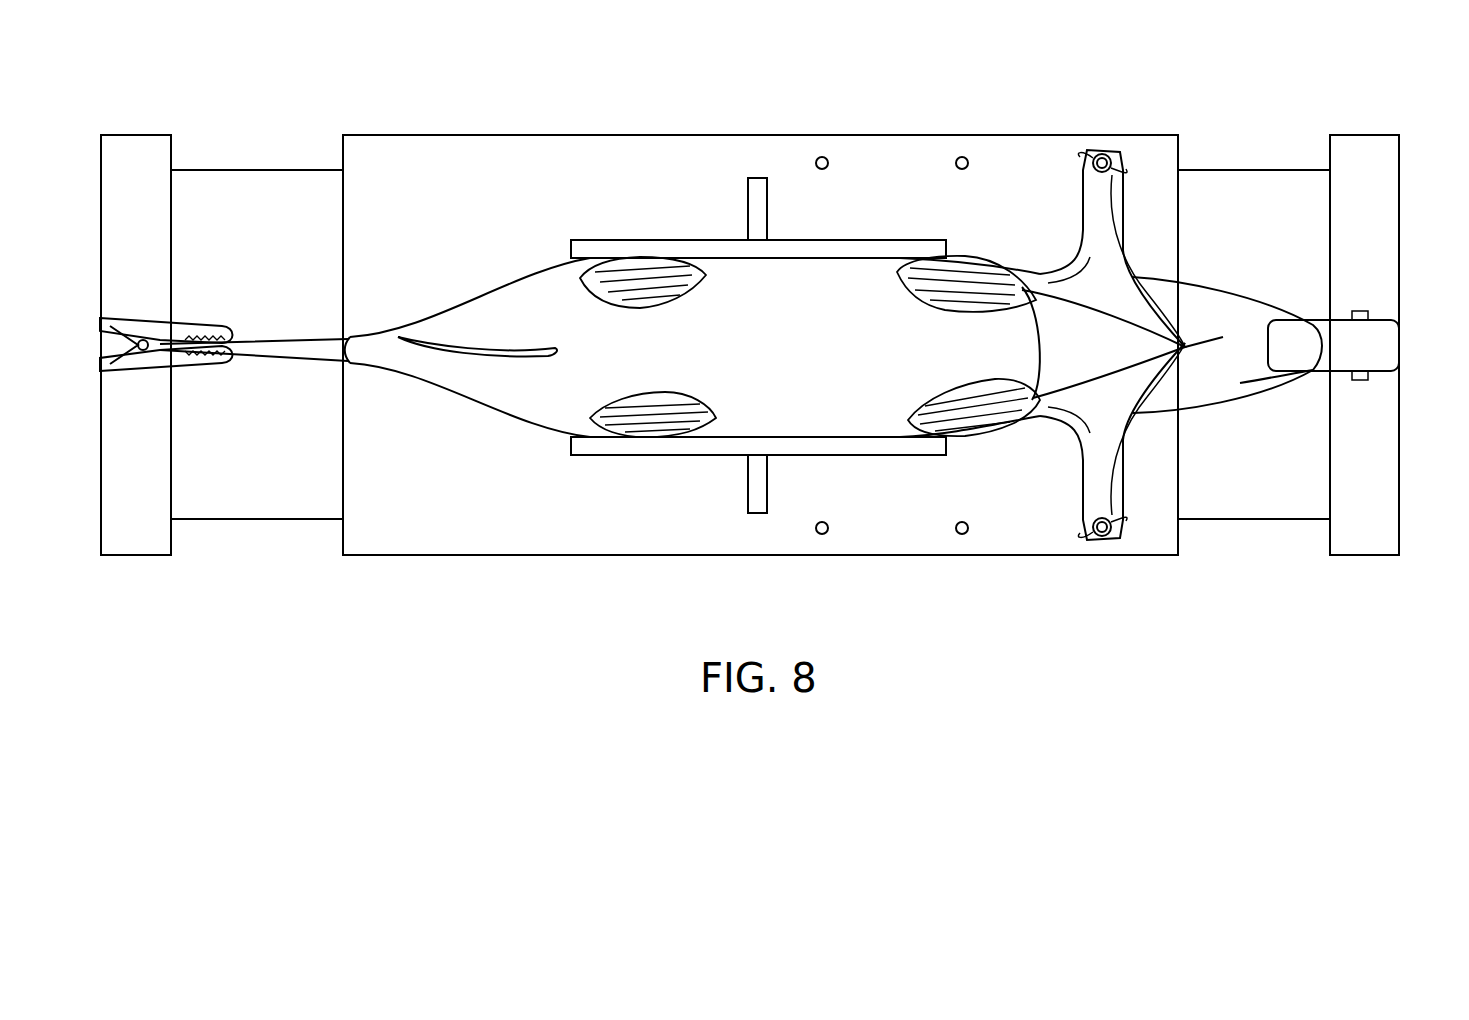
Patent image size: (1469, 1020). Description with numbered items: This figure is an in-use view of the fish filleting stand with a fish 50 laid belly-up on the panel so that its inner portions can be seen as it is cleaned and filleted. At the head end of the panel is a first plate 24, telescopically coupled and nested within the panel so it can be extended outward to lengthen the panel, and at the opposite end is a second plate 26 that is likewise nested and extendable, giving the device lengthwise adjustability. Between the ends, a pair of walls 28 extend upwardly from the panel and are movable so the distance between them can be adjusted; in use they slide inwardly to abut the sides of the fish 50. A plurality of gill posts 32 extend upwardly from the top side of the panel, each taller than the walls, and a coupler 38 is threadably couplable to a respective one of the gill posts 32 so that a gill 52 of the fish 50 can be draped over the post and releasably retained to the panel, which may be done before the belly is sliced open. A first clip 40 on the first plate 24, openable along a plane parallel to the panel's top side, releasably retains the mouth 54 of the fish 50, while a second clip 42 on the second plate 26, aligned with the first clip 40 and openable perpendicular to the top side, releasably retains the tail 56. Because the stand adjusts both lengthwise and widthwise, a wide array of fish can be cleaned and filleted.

The first plate 24 is at (1360, 155).
The second plate 26 is at (130, 152).
The pair of walls 28 is at (692, 248).
The plurality of gill posts 32 is at (1105, 545).
The coupler 38 is at (1082, 540).
The first clip 40 is at (1385, 345).
The second clip 42 is at (185, 372).
The fish 50 is at (741, 363).
The gill 52 is at (1120, 541).
The mouth 54 is at (1300, 380).
The tail 56 is at (268, 345).